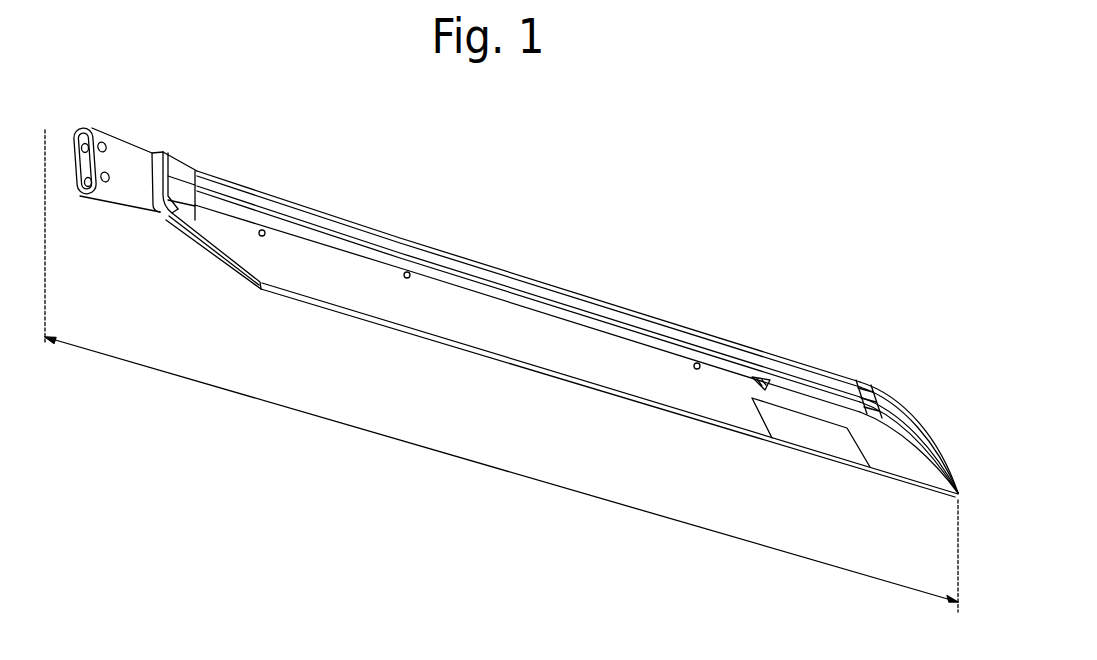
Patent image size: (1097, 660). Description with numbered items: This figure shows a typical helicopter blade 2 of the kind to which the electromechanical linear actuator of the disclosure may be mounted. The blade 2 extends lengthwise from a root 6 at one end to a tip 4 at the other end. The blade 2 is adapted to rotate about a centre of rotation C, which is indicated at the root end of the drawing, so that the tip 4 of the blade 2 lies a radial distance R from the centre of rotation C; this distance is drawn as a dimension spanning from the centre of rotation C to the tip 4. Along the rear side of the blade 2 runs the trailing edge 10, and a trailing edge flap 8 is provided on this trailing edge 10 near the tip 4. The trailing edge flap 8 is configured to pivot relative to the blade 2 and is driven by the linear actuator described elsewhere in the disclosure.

The helicopter blade 2 is at (576, 341).
The tip 4 is at (923, 428).
The root 6 is at (233, 183).
The trailing edge flap 8 is at (797, 435).
The trailing edge 10 is at (911, 483).
The centre of rotation C is at (45, 130).
The radial distance R is at (501, 474).